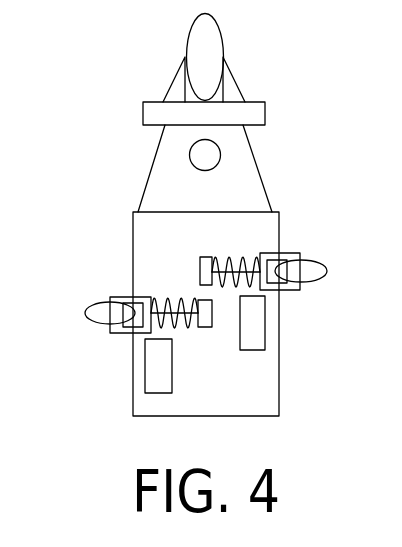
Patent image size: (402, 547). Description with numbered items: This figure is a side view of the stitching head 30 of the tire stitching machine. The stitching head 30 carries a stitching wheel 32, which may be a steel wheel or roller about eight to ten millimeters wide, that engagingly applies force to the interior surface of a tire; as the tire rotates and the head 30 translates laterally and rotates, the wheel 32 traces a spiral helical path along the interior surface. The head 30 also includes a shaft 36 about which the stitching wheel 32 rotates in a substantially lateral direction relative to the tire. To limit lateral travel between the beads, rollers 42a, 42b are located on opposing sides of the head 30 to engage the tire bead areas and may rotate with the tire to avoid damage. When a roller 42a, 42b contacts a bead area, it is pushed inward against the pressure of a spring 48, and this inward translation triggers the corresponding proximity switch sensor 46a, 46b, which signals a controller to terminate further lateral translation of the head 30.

The stitching head 30 is at (88, 80).
The stitching wheel 32 is at (202, 50).
The shaft 36 is at (217, 160).
The roller 42a is at (103, 307).
The roller 42b is at (320, 272).
The sensor 46a is at (156, 362).
The sensor 46b is at (253, 327).
The spring 48 is at (233, 256).